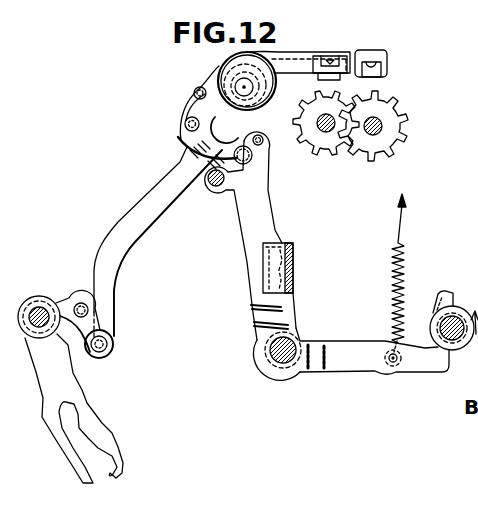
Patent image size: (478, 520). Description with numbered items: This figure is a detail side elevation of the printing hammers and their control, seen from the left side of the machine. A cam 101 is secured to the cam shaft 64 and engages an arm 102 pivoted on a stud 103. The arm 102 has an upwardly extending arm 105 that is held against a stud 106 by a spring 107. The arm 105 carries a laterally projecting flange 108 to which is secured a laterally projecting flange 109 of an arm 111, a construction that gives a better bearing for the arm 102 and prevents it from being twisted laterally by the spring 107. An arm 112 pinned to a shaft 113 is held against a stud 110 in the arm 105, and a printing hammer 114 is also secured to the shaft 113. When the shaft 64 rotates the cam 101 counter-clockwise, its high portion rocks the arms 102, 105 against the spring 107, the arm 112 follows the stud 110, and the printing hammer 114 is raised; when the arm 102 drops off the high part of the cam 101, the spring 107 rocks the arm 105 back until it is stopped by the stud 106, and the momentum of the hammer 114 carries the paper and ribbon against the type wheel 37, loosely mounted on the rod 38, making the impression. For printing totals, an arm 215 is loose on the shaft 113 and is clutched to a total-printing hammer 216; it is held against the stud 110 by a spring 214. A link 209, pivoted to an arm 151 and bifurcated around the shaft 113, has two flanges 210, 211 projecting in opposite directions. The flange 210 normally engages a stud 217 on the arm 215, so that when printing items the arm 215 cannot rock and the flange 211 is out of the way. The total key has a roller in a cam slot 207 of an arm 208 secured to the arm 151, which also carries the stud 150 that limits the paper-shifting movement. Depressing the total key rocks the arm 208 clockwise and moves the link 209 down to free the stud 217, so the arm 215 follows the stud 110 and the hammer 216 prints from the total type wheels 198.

The shaft 113 is at (227, 68).
The total-printing hammer 216 is at (276, 58).
The printing hammer 114 is at (388, 63).
The type wheel 37 is at (389, 116).
The rod 38 is at (373, 134).
The total type wheels 198 is at (325, 157).
The flange 211 is at (209, 106).
The arm 112 is at (183, 106).
The stud 217 is at (185, 124).
The arm 215 is at (190, 136).
The flange 210 is at (197, 148).
The stud 110 is at (251, 163).
The stud 106 is at (211, 184).
The spring 214 is at (271, 144).
The arm 105 is at (269, 210).
The flange 108 is at (295, 253).
The flange 109 is at (278, 263).
The arm 111 is at (256, 309).
The stud 103 is at (288, 362).
The arm 102 is at (375, 366).
The spring 107 is at (396, 286).
The cam 101 is at (438, 296).
The cam shaft 64 is at (442, 328).
The link 209 is at (114, 284).
The arm 208 is at (73, 372).
The cam slot 207 is at (110, 474).
The arm 151 is at (64, 303).
The stud 150 is at (91, 302).